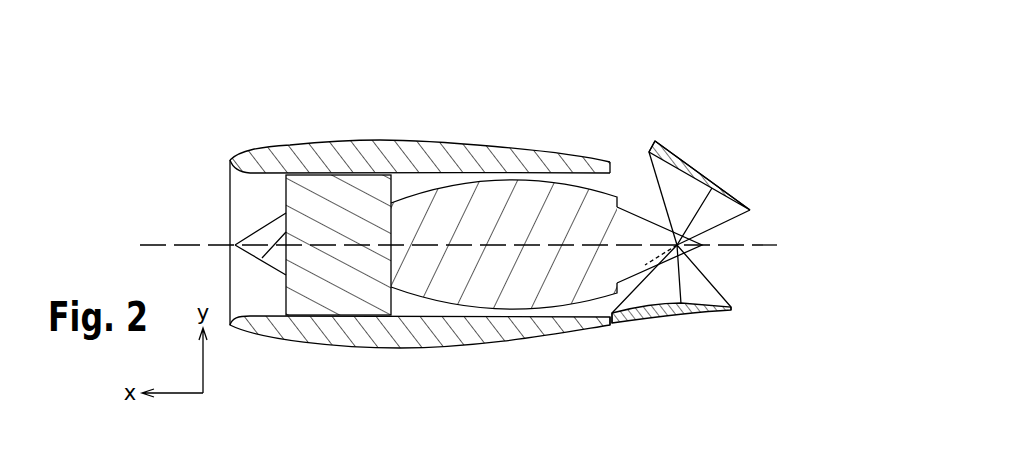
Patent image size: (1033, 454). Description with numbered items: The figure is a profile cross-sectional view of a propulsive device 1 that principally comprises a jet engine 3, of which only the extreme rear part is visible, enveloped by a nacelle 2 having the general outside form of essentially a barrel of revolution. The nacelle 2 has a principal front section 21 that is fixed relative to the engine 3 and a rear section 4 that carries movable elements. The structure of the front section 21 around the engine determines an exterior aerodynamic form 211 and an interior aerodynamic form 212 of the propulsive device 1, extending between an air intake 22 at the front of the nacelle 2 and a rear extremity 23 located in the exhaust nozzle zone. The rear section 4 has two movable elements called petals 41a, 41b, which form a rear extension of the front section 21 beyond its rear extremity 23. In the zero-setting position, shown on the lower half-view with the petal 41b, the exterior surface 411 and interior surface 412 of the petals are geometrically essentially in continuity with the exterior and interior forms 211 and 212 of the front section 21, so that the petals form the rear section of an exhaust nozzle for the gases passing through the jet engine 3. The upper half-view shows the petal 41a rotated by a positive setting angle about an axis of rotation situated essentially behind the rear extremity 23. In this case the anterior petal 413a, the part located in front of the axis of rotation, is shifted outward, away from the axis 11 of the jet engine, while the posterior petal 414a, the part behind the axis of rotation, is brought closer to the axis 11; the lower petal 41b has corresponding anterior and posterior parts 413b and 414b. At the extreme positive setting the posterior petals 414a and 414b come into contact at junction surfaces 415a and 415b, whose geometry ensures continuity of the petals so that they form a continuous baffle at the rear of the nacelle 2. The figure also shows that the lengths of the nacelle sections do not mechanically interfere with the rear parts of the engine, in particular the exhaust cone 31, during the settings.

The propulsive device 1 is at (556, 88).
The nacelle 2 is at (355, 358).
The jet engine 3 is at (325, 297).
The rear section 4 is at (329, 0).
The axis of the jet engine 11 is at (163, 243).
The front section 21 is at (420, 123).
The exterior aerodynamic form 211 is at (288, 147).
The interior aerodynamic form 212 is at (440, 172).
The air intake 22 is at (230, 208).
The rear extremity 23 is at (615, 168).
The exhaust cone 31 is at (648, 222).
The petal 41a is at (764, 165).
The petal 41b is at (730, 325).
The exterior surface of the petal 411 is at (670, 190).
The interior surface of the petal 412 is at (688, 182).
The anterior petal 413a is at (656, 146).
The anterior petal 413b is at (660, 313).
The posterior petal 414a is at (732, 196).
The posterior petal 414b is at (700, 313).
The junction surface 415a is at (752, 209).
The junction surface 415b is at (733, 308).